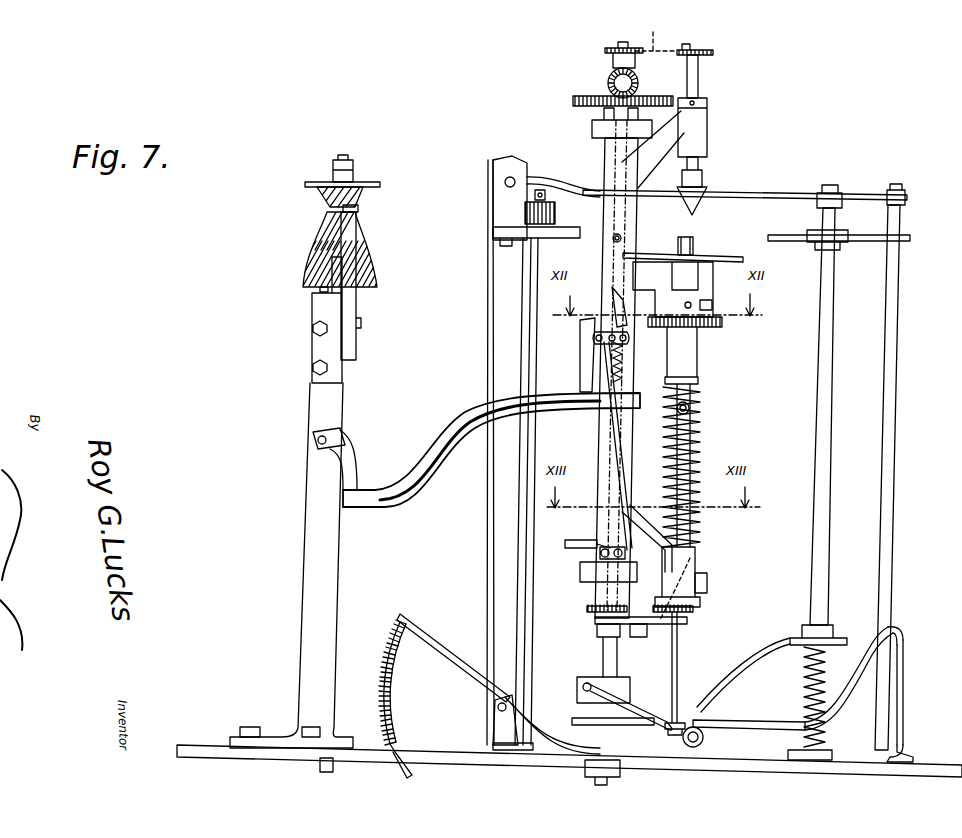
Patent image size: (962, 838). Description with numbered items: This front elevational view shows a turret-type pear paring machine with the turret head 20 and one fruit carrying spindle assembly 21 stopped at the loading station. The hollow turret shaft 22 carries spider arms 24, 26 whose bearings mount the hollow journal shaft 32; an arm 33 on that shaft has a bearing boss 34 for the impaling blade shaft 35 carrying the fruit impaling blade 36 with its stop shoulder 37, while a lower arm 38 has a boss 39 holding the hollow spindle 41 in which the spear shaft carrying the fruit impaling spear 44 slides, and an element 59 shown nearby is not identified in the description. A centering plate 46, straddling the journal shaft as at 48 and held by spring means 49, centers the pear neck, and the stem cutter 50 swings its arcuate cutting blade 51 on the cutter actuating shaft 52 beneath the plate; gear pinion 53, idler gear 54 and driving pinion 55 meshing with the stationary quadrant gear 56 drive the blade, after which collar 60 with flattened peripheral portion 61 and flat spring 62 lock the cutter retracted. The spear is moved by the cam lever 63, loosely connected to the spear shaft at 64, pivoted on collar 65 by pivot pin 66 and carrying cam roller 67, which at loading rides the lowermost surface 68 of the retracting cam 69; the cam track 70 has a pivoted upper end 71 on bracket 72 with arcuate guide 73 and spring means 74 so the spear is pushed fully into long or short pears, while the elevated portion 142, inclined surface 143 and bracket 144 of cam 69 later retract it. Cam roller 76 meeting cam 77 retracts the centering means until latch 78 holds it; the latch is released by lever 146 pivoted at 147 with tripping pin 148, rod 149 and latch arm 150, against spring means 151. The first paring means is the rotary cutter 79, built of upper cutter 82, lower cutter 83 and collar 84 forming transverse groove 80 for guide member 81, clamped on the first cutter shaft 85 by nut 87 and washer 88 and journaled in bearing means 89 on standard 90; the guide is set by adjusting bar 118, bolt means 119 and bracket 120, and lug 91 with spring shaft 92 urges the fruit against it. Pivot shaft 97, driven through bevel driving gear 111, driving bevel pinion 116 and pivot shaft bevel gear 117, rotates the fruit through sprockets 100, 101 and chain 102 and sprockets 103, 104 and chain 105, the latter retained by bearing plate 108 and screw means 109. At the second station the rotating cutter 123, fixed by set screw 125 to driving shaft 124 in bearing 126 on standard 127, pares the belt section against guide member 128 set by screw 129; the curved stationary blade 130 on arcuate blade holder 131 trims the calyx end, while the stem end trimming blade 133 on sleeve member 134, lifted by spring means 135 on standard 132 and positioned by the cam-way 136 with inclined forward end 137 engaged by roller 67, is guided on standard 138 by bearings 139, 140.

The machine 20 is at (566, 68).
The bracket 21 is at (707, 142).
The column 22 is at (636, 235).
The bearing block 24 is at (592, 128).
The frame member 26 is at (600, 579).
The shaft 32 is at (600, 479).
The diagonal arm 33 is at (652, 169).
The bracket 34 is at (707, 123).
The spindle 35 is at (698, 81).
The pointer 36 is at (677, 206).
The collar 37 is at (702, 178).
The link 38 is at (620, 516).
The block 39 is at (695, 556).
The spring 41 is at (686, 463).
The spindle 44 is at (690, 240).
The spindle 46 is at (695, 252).
The pin 48 is at (627, 258).
The rod 49 is at (690, 487).
The housing 50 is at (717, 276).
The plate 51 is at (728, 256).
The housing wall 52 is at (713, 286).
The gear hub 53 is at (715, 326).
The gear 54 is at (688, 330).
The gear bracket 55 is at (655, 318).
The bracket 56 is at (582, 373).
The block 59 is at (707, 583).
The gear rim 60 is at (720, 320).
The block 61 is at (712, 305).
The pin 62 is at (688, 305).
The lever 63 is at (640, 706).
The bar 64 is at (600, 726).
The block 65 is at (577, 694).
The pivot 66 is at (585, 683).
The roller 67 is at (704, 740).
The bar 68 is at (755, 729).
The bar 69 is at (772, 713).
The rod 70 is at (538, 736).
The rack bar 71 is at (462, 640).
The pivot bracket 72 is at (494, 722).
The rack teeth 73 is at (400, 690).
The curved rack 74 is at (394, 648).
The pin 76 is at (690, 410).
The arm 77 is at (462, 426).
The pawl 78 is at (612, 306).
The cam 79 is at (300, 270).
The cam 80 is at (330, 208).
The collar 81 is at (360, 212).
The plate 82 is at (378, 186).
The cam surface 83 is at (371, 246).
The cam surface 84 is at (333, 209).
The bolt 85 is at (348, 160).
The nut 87 is at (354, 165).
The washer 88 is at (354, 174).
The pin 89 is at (320, 291).
The post 90 is at (306, 520).
The arm 91 is at (597, 546).
The bar 92 is at (565, 543).
The arm 97 is at (612, 178).
The gear 100 is at (713, 52).
The gear 101 is at (612, 48).
The center line 102 is at (656, 31).
The teeth 103 is at (688, 613).
The teeth 104 is at (590, 611).
The path 105 is at (705, 562).
The rod 108 is at (660, 623).
The base block 109 is at (603, 629).
The bevel gear 111 is at (575, 98).
The gear 116 is at (637, 80).
The gear teeth 117 is at (639, 87).
The plate 118 is at (357, 346).
The collar 119 is at (360, 207).
The plate 120 is at (342, 371).
The coil 123 is at (556, 212).
The rod 124 is at (531, 300).
The pin 125 is at (542, 191).
The rod 126 is at (523, 244).
The post 127 is at (487, 337).
The plate 128 is at (562, 237).
The bracket 129 is at (493, 211).
The nut 130 is at (858, 194).
The bar 131 is at (748, 190).
The nut 132 is at (828, 185).
The bearing 133 is at (796, 243).
The rod 134 is at (815, 357).
The spring 135 is at (804, 663).
The block 136 is at (787, 615).
The arm 137 is at (745, 653).
The rod 138 is at (891, 460).
The plate 139 is at (910, 237).
The rod 140 is at (904, 646).
The hook 142 is at (891, 627).
The arm 143 is at (851, 690).
The rod 144 is at (903, 684).
The block 146 is at (610, 582).
The block 147 is at (595, 573).
The pin 148 is at (604, 551).
The bar 149 is at (612, 446).
The link 150 is at (593, 334).
The spring 151 is at (626, 360).